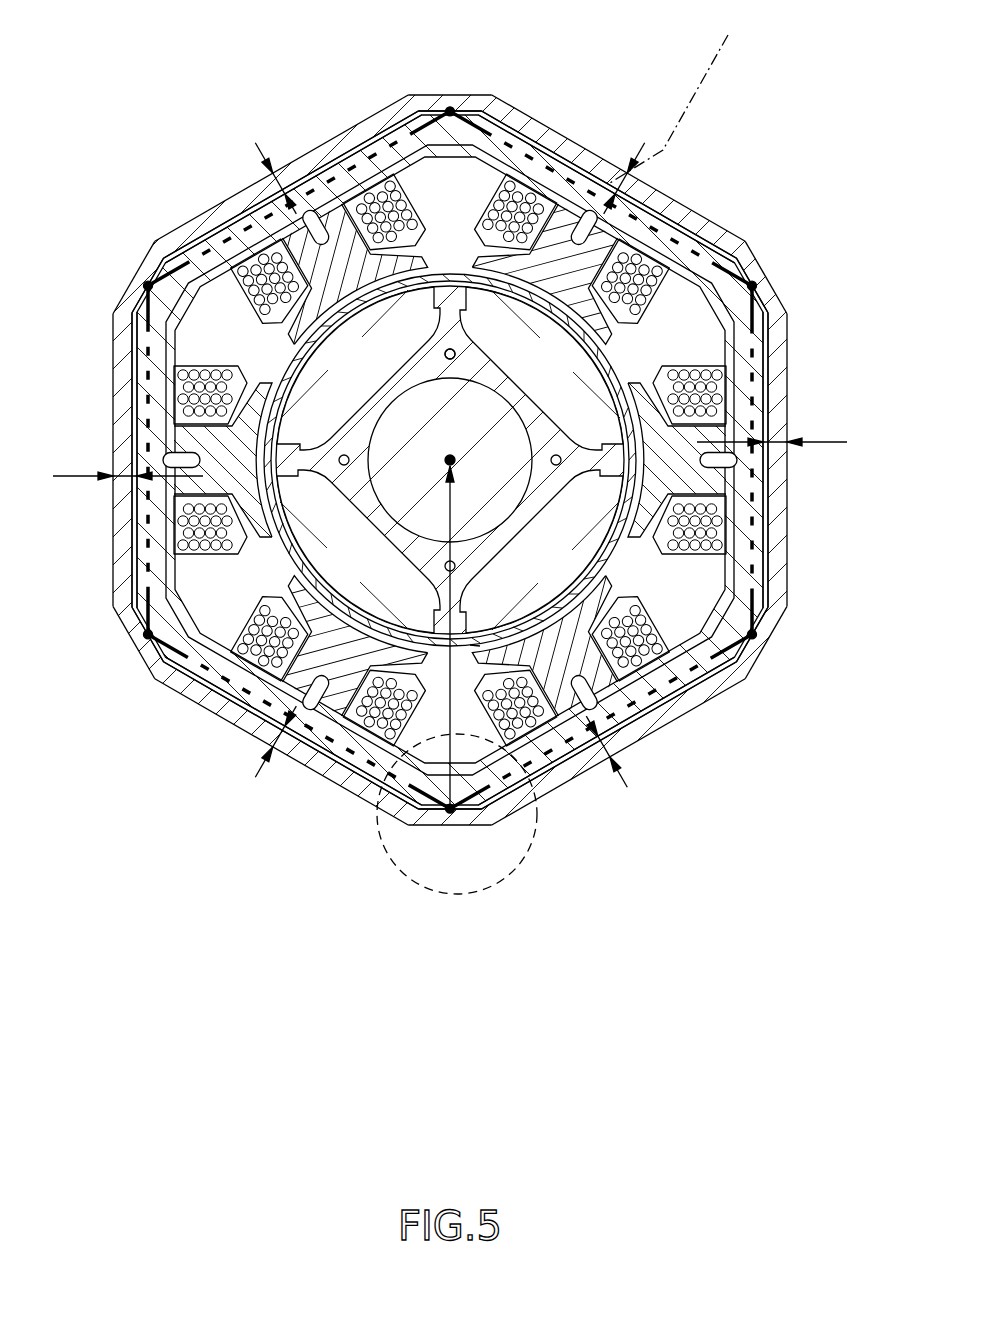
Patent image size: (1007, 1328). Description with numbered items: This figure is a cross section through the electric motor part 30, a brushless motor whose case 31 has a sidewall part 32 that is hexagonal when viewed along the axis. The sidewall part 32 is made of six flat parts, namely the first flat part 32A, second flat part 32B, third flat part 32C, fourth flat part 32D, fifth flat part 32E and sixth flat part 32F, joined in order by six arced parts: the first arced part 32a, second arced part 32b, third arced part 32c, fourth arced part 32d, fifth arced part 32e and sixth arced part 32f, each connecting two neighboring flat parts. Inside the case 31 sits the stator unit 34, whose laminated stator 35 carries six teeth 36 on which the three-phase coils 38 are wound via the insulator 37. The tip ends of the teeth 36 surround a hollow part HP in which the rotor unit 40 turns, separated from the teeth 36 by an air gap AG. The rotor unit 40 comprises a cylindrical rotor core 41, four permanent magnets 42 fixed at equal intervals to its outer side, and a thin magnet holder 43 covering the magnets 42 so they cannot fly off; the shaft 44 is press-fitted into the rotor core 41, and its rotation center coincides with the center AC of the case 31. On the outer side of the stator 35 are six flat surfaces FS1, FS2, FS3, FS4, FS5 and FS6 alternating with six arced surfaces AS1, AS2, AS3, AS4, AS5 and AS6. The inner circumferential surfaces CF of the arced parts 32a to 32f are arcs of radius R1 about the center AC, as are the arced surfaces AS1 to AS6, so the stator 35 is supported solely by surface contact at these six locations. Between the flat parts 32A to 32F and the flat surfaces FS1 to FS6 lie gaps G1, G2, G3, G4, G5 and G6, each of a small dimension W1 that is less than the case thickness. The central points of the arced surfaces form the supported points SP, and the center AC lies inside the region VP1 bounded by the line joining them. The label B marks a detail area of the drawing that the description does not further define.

The electric motor part 30 is at (182, 97).
The case 31 is at (543, 108).
The sidewall part 32 is at (668, 153).
The first flat part 32A is at (603, 148).
The second flat part 32B is at (788, 395).
The third flat part 32C is at (690, 713).
The fourth flat part 32D is at (217, 713).
The fifth flat part 32E is at (118, 530).
The sixth flat part 32F is at (200, 222).
The first arced part 32a is at (770, 262).
The second arced part 32b is at (776, 645).
The third arced part 32c is at (430, 825).
The fourth arced part 32d is at (160, 655).
The fifth arced part 32e is at (140, 255).
The sixth arced part 32f is at (425, 105).
The stator unit 34 is at (342, 782).
The stator 35 is at (330, 140).
The teeth 36 is at (656, 474).
The insulator 37 is at (645, 690).
The coils 38 is at (765, 560).
The rotor unit 40 is at (617, 361).
The rotor core 41 is at (226, 690).
The permanent magnets 42 is at (538, 366).
The magnet holder 43 is at (220, 268).
The shaft 44 is at (436, 434).
The first arced surface AS1 is at (758, 252).
The second arced surface AS2 is at (745, 662).
The third arced surface AS3 is at (455, 825).
The fourth arced surface AS4 is at (130, 640).
The fifth arced surface AS5 is at (132, 290).
The sixth arced surface AS6 is at (453, 107).
The first flat surface FS1 is at (698, 210).
The second flat surface FS2 is at (782, 530).
The third flat surface FS3 is at (613, 760).
The fourth flat surface FS4 is at (372, 800).
The fifth flat surface FS5 is at (130, 405).
The sixth flat surface FS6 is at (250, 192).
The gap G1 is at (567, 142).
The gap G2 is at (770, 400).
The gap G3 is at (656, 742).
The gap G4 is at (265, 755).
The gap G5 is at (128, 440).
The gap G6 is at (290, 172).
The supported points SP is at (447, 106).
The inner circumferential surfaces CF is at (395, 142).
The small dimension W1 is at (450, 456).
The hollow part HP is at (448, 345).
The region VP1 is at (691, 96).
The center AC is at (474, 473).
The radius R1 is at (467, 637).
The air gap AG is at (493, 652).
The region B is at (472, 893).